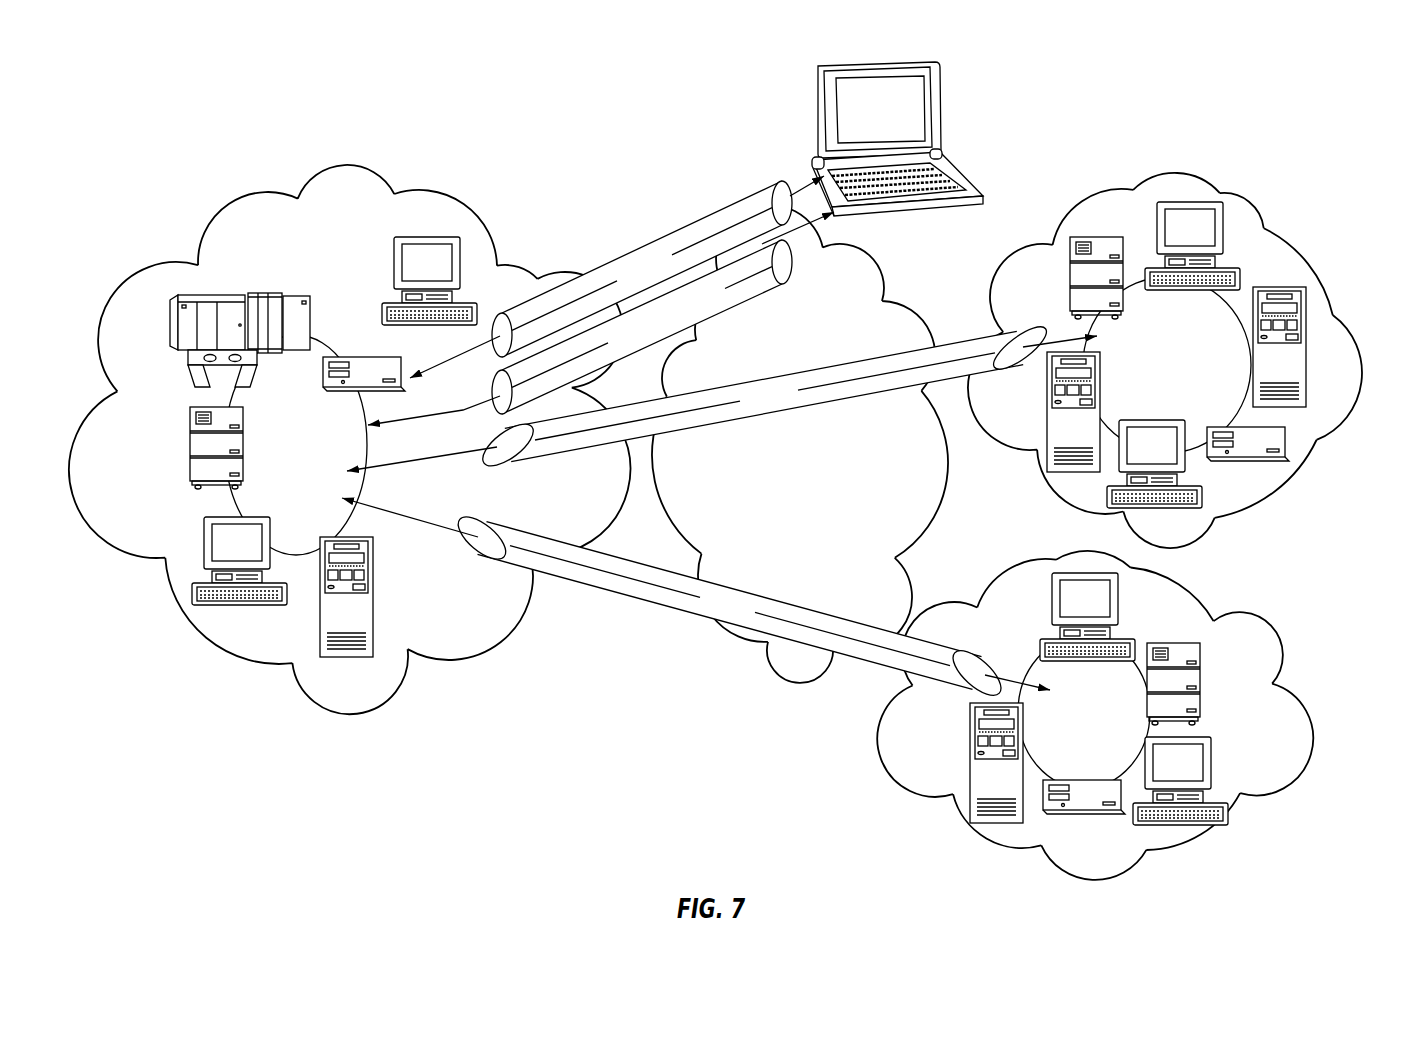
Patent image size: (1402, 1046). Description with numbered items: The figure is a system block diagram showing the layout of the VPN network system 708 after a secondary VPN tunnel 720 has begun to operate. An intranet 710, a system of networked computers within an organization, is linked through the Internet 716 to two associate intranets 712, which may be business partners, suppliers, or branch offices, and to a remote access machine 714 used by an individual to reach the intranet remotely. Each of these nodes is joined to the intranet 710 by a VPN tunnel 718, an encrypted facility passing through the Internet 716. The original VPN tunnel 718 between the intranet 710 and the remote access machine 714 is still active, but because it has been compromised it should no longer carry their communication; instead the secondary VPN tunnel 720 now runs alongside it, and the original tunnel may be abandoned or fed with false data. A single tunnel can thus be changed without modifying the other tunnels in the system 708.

The VPN network system 708 is at (721, 471).
The intranet 710 is at (131, 284).
The associate intranet 712 is at (1173, 170).
The remote access machine 714 is at (813, 120).
The Internet 716 is at (878, 262).
The original VPN tunnel 718 is at (647, 243).
The secondary VPN tunnel 720 is at (763, 294).